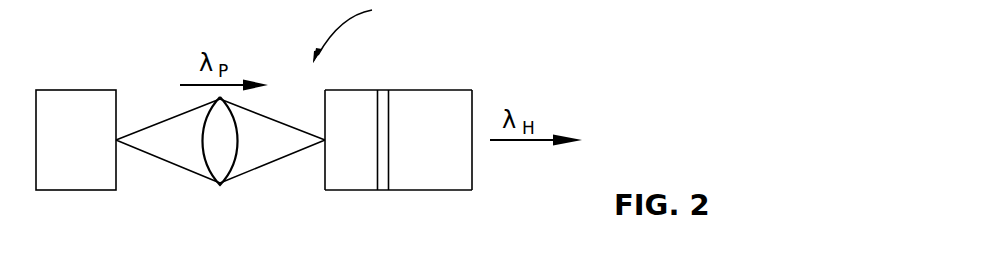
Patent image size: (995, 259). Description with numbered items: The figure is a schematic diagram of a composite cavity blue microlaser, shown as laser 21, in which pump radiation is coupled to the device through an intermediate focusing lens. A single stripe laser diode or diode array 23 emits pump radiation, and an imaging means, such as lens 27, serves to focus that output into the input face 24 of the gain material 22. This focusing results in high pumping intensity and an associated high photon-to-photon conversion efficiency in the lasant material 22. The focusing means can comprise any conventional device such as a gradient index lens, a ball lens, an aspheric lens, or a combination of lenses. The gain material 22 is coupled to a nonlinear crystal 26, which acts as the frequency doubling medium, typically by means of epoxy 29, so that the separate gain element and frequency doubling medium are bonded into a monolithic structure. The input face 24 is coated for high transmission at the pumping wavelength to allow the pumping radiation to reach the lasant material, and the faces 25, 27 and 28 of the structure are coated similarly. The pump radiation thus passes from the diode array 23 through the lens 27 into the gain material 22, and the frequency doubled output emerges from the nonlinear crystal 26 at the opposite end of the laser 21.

The laser 21 is at (359, 31).
The gain material 22 is at (350, 92).
The laser diode array 23 is at (75, 90).
The input face 24 is at (323, 181).
The face 25 is at (473, 178).
The nonlinear crystal 26 is at (438, 92).
The lens 27 is at (212, 157).
The face 28 is at (388, 117).
The epoxy 29 is at (383, 186).